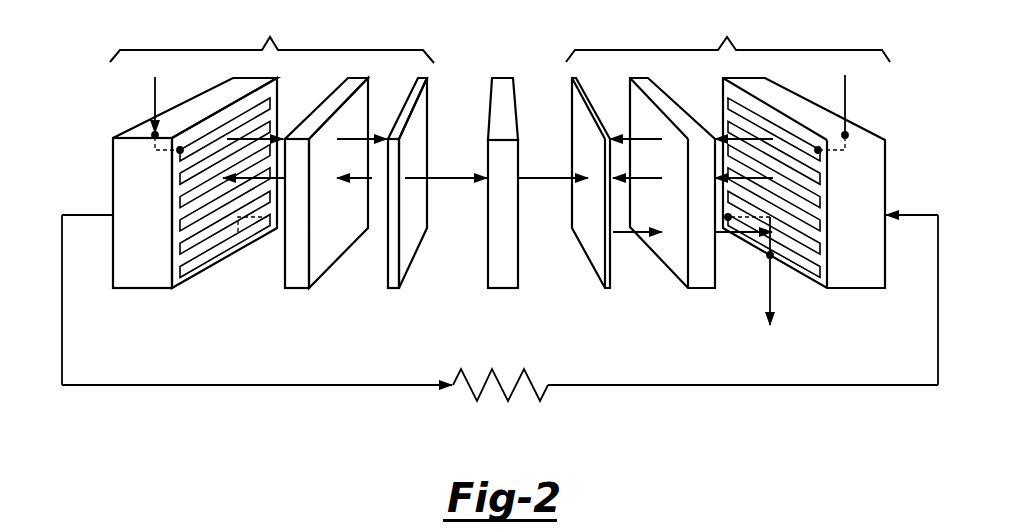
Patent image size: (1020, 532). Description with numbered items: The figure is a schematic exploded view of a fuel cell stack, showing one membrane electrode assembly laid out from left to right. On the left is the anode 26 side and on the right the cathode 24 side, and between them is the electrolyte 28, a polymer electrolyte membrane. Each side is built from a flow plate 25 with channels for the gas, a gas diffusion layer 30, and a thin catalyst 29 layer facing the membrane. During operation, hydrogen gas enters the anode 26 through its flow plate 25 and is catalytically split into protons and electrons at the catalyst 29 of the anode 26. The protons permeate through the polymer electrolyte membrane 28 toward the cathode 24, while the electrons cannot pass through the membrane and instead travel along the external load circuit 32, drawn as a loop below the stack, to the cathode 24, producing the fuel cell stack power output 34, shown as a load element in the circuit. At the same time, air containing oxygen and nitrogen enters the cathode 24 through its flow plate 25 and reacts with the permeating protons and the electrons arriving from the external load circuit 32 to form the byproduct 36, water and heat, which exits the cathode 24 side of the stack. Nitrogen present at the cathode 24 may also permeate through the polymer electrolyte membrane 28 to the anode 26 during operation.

The cathode 24 is at (728, 37).
The flow plates 25 is at (142, 290).
The anode 26 is at (272, 38).
The electrolyte 28 is at (500, 78).
The catalyst 29 is at (392, 290).
The gas diffusion layers 30 is at (288, 290).
The external load circuit 32 is at (747, 386).
The fuel cell stack power output 34 is at (473, 393).
The byproduct 36 is at (825, 362).